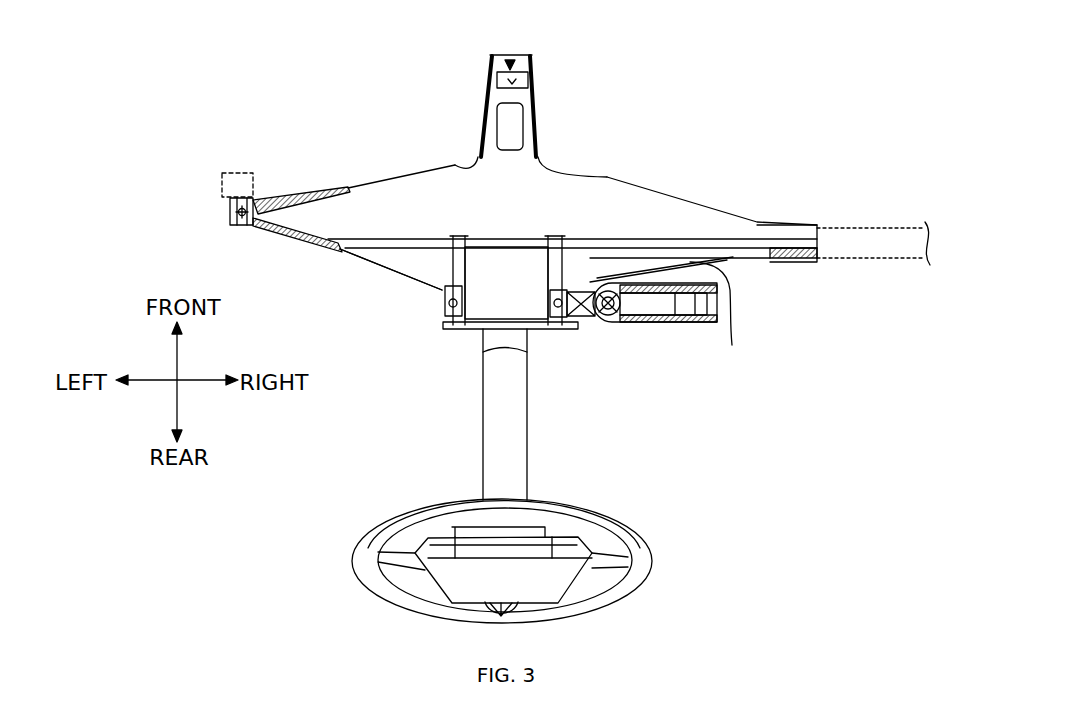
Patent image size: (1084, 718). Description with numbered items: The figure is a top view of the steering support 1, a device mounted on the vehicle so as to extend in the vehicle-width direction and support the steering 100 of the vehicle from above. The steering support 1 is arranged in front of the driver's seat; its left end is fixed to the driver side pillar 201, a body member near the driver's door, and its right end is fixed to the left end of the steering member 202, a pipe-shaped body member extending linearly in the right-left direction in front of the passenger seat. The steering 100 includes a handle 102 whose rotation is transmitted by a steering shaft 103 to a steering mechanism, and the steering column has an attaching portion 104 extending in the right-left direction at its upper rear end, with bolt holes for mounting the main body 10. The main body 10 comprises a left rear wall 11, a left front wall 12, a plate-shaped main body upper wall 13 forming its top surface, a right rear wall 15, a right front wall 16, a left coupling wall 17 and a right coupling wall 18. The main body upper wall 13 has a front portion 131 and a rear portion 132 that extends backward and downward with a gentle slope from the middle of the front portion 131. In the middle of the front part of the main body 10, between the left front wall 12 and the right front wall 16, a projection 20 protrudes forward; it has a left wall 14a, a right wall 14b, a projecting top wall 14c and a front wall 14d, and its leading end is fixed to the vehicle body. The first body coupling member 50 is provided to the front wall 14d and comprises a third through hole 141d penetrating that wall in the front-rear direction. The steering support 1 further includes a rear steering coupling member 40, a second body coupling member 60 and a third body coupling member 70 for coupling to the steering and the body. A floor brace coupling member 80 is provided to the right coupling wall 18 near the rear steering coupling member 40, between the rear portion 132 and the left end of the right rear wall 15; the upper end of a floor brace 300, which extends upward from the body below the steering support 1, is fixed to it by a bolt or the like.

The steering support 1 is at (706, 109).
The main body 10 is at (698, 172).
The left rear wall 11 is at (348, 257).
The left front wall 12 is at (293, 195).
The main body upper wall 13 is at (608, 178).
The left wall 14a is at (485, 117).
The right wall 14b is at (537, 110).
The projecting top wall 14c is at (527, 133).
The front wall 14d is at (523, 80).
The third through hole 141d is at (513, 82).
The right rear wall 15 is at (740, 268).
The right front wall 16 is at (715, 213).
The left coupling wall 17 is at (416, 258).
The right coupling wall 18 is at (732, 345).
The projection 20 is at (576, 82).
The rear steering coupling member 40 is at (547, 304).
The first body coupling member 50 is at (510, 62).
The second body coupling member 60 is at (224, 211).
The third body coupling member 70 is at (800, 270).
The floor brace coupling member 80 is at (606, 330).
The steering 100 is at (672, 454).
The handle 102 is at (633, 530).
The steering shaft 103 is at (530, 432).
The attaching portion 104 is at (549, 330).
The front portion 131 is at (408, 197).
The rear portion 132 is at (503, 273).
The driver side pillar 201 is at (237, 172).
The steering member 202 is at (888, 260).
The floor brace 300 is at (680, 325).